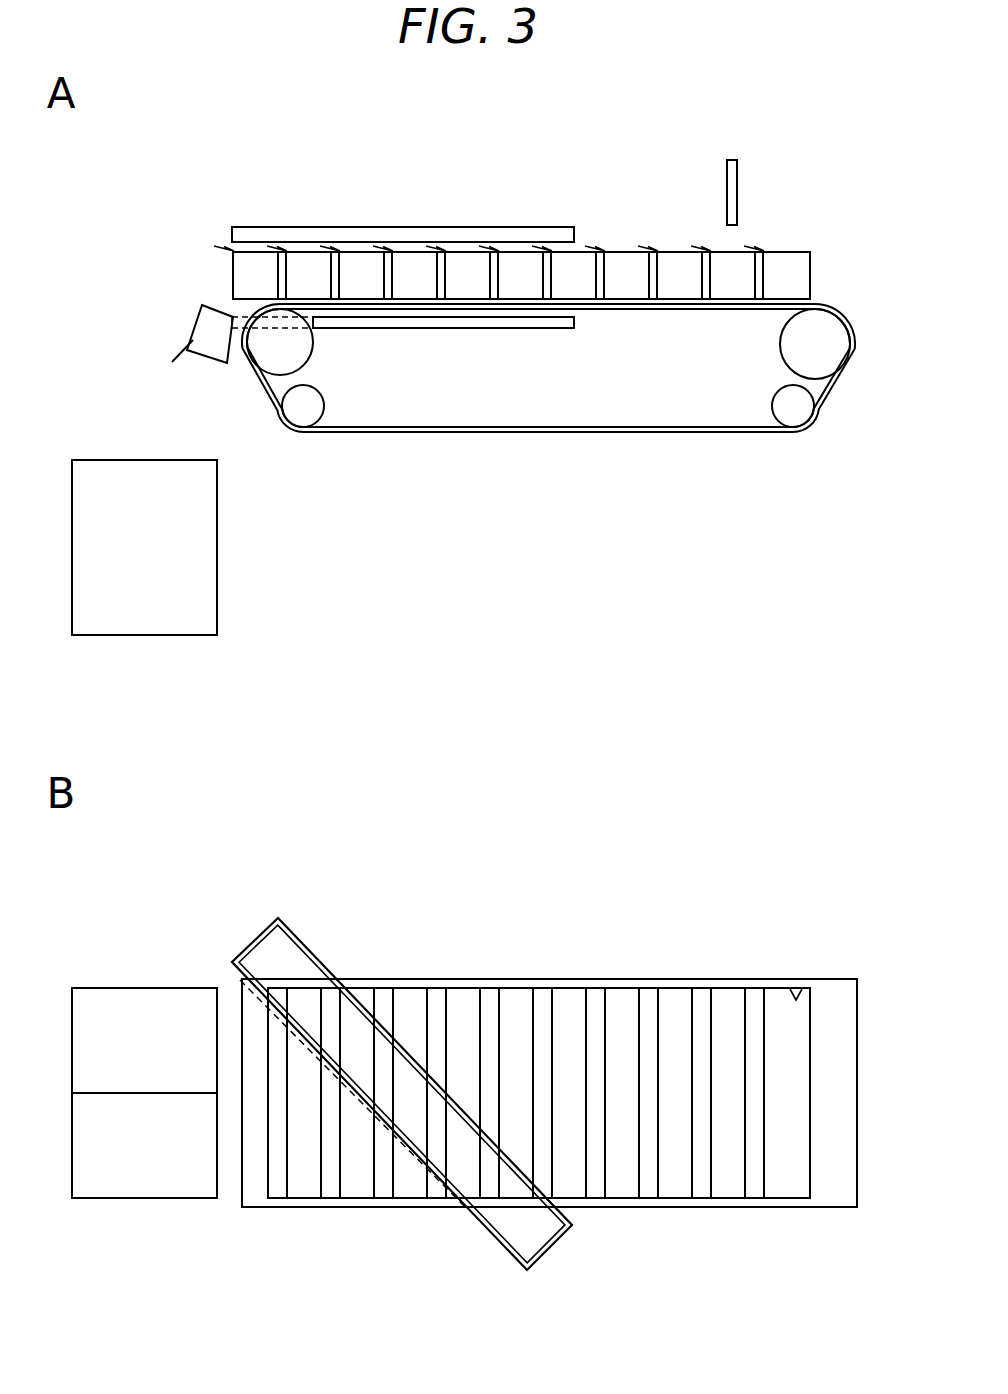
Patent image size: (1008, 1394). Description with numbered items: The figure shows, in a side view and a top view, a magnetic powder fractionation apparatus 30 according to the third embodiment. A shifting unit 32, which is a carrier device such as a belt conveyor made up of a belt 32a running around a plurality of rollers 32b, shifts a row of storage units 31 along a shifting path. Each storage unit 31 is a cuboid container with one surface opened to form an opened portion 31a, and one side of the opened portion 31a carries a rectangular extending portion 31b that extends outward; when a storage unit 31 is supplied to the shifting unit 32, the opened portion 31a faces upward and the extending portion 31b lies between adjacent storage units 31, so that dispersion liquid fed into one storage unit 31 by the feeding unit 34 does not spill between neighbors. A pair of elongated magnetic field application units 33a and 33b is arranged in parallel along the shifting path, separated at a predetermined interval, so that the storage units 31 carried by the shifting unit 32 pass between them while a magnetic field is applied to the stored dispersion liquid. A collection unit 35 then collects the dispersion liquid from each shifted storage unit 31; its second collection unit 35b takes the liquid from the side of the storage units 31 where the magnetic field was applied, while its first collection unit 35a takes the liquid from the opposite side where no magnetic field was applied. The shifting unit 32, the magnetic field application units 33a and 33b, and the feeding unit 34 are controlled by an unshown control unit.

The magnetic powder fractionation apparatus 30 is at (765, 110).
The storage unit 31 is at (799, 250).
The opened portion 31a is at (797, 990).
The extending portion 31b is at (750, 250).
The shifting unit 32 is at (742, 450).
The belt 32a is at (605, 432).
The roller 32b is at (306, 362).
The magnetic field application unit 33a is at (485, 227).
The magnetic field application unit 33b is at (510, 330).
The feeding unit 34 is at (737, 175).
The collection unit 35 is at (229, 548).
The first collection unit 35a is at (68, 1141).
The second collection unit 35b is at (68, 1041).